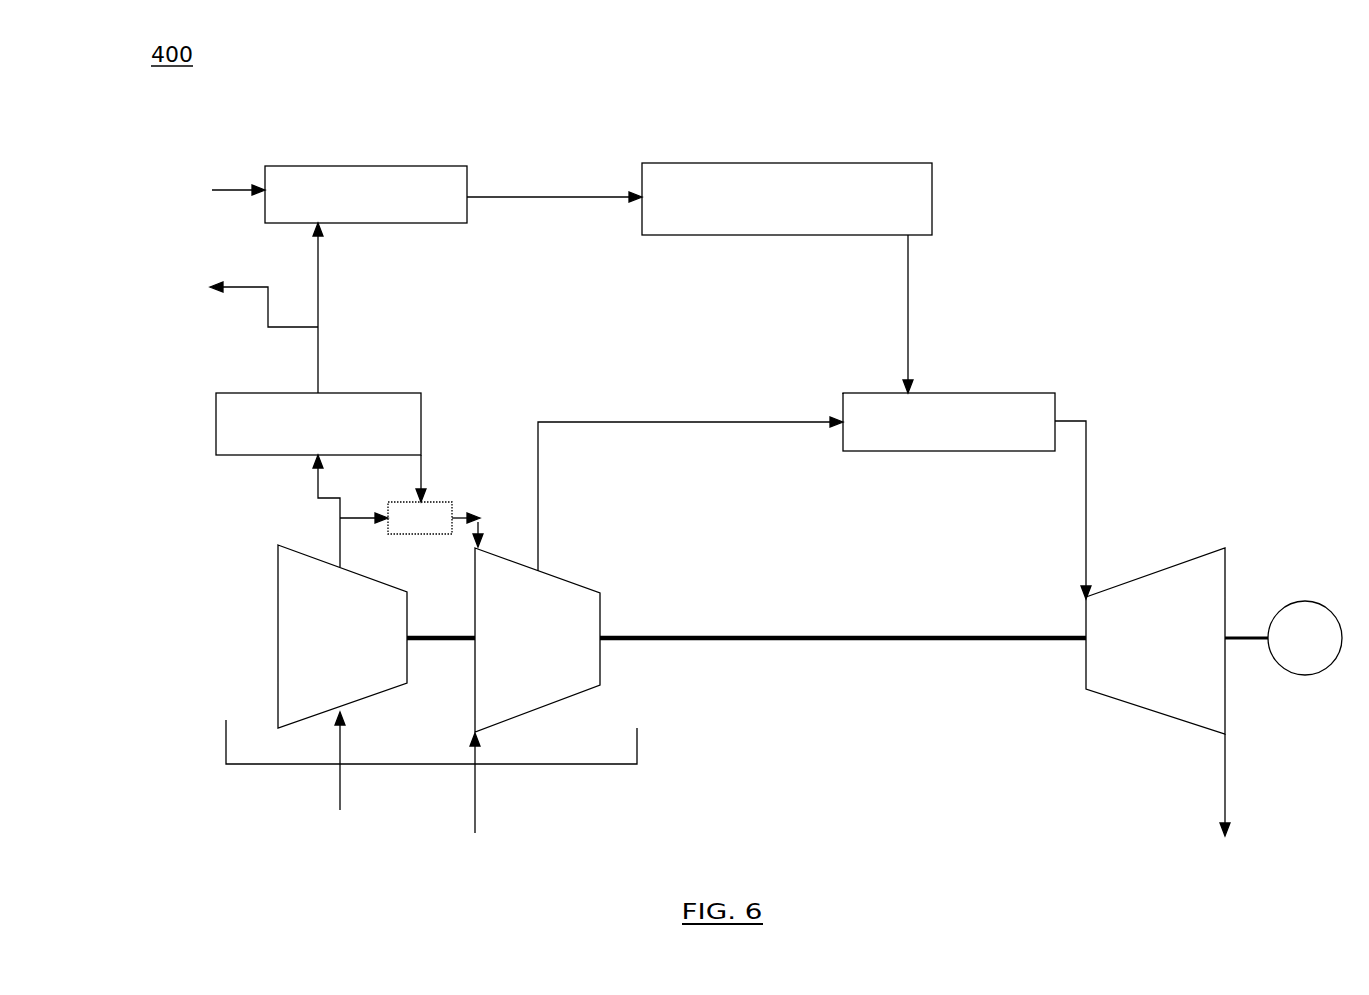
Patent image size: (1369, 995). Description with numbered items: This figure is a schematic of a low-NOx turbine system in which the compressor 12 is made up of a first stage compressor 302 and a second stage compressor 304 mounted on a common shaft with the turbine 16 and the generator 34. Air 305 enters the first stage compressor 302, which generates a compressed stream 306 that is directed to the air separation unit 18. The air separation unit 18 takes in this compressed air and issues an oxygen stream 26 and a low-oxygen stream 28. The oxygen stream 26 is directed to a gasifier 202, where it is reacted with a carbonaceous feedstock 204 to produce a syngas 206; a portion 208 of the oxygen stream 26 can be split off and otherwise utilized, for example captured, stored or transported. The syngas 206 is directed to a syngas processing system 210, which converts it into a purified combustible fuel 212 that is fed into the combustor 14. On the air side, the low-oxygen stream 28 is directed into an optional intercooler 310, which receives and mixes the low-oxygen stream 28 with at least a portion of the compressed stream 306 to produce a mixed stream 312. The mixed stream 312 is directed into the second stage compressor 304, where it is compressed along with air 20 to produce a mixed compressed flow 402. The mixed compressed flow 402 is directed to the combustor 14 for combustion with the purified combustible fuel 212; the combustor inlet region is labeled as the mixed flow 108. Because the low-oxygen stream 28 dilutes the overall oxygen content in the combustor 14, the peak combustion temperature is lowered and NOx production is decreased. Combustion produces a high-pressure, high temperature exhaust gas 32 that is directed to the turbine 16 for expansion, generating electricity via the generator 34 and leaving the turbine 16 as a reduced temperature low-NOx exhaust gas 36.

The gasifier 202 is at (345, 212).
The carbonaceous feedstock 204 is at (211, 189).
The syngas 206 is at (554, 182).
The portion of oxygen stream 208 is at (241, 292).
The syngas processing system 210 is at (747, 214).
The purified combustible fuel 212 is at (934, 314).
The mixed flow 108 is at (823, 366).
The combustor 14 is at (933, 439).
The mixed compressed flow 402 is at (690, 482).
The exhaust gas 32 is at (1091, 510).
The turbine 16 is at (1143, 644).
The generator 34 is at (1305, 601).
The low-NOx exhaust gas 36 is at (1229, 804).
The air separation unit 18 is at (299, 442).
The oxygen stream 26 is at (338, 308).
The low-oxygen stream 28 is at (439, 478).
The intercooler 310 is at (399, 531).
The compressed stream 306 is at (323, 511).
The mixed stream 312 is at (480, 524).
The first stage compressor 302 is at (312, 652).
The second stage compressor 304 is at (512, 656).
The compressor 12 is at (424, 764).
The air 305 is at (352, 780).
The air 20 is at (475, 800).